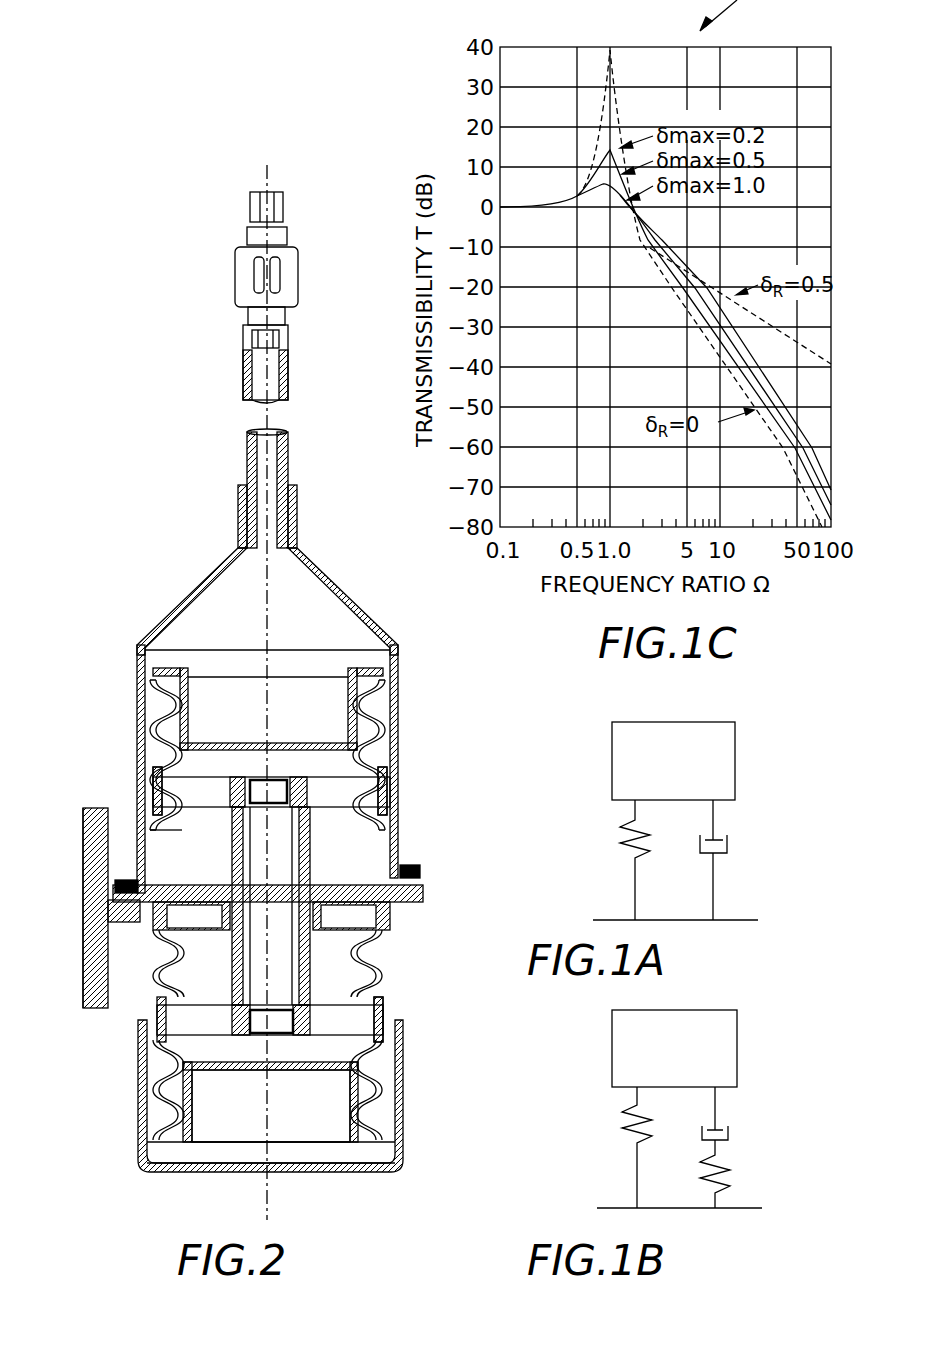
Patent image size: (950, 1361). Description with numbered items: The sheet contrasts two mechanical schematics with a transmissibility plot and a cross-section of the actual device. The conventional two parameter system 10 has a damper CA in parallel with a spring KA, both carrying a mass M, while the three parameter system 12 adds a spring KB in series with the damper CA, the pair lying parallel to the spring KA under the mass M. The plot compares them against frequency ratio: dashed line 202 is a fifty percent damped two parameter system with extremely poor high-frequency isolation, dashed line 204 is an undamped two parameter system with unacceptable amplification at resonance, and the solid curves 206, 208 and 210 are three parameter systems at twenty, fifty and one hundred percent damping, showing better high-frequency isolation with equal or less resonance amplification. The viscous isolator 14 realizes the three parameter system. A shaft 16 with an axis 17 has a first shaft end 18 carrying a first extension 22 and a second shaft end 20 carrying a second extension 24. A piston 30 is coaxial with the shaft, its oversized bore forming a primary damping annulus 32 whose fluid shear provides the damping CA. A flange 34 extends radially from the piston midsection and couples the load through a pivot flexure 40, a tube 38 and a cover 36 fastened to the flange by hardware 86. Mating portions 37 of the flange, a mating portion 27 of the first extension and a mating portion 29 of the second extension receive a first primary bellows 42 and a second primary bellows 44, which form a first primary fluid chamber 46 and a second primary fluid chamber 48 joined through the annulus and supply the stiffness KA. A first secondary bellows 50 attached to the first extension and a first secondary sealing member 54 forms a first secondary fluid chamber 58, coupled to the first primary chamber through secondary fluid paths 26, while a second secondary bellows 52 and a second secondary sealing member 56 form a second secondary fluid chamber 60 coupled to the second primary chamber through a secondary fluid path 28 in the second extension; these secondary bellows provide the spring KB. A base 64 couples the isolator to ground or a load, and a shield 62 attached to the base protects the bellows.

In FIG. 1A, the two parameter system 10 is at (765, 700).
In FIG. 1B, the three parameter system 12 is at (778, 975).
In FIG. 2, the viscous isolator 14 is at (185, 328).
In FIG. 2, the shaft 16 is at (285, 855).
In FIG. 2, the axis 17 is at (265, 705).
In FIG. 2, the first shaft end 18 is at (295, 773).
In FIG. 2, the second shaft end 20 is at (290, 1043).
In FIG. 2, the first extension 22 is at (383, 780).
In FIG. 2, the second extension 24 is at (395, 992).
In FIG. 2, the secondary fluid paths 26 is at (207, 787).
In FIG. 2, the mating portion 27 is at (135, 800).
In FIG. 2, the secondary fluid path 28 is at (140, 1163).
In FIG. 2, the mating portion 29 is at (385, 1012).
In FIG. 2, the piston 30 is at (152, 948).
In FIG. 2, the primary damping annulus 32 is at (305, 955).
In FIG. 2, the flange 34 is at (380, 912).
In FIG. 2, the cover 36 is at (313, 568).
In FIG. 2, the mating portions 37 is at (135, 918).
In FIG. 2, the tube 38 is at (289, 458).
In FIG. 2, the pivot flexure 40 is at (285, 248).
In FIG. 2, the first primary bellows 42 is at (90, 843).
In FIG. 2, the second primary bellows 44 is at (150, 975).
In FIG. 2, the first primary fluid chamber 46 is at (140, 835).
In FIG. 2, the second primary fluid chamber 48 is at (177, 1052).
In FIG. 2, the first secondary bellows 50 is at (135, 668).
In FIG. 2, the second secondary bellows 52 is at (383, 1070).
In FIG. 2, the first secondary sealing member 54 is at (352, 680).
In FIG. 2, the second secondary sealing member 56 is at (365, 1143).
In FIG. 2, the first secondary fluid chamber 58 is at (187, 668).
In FIG. 2, the second secondary fluid chamber 60 is at (283, 1050).
In FIG. 2, the shield 62 is at (250, 1173).
In FIG. 2, the base 64 is at (83, 858).
In FIG. 2, the hardware 86 is at (415, 866).
In FIG. 1C, the dashed line 202 is at (760, 320).
In FIG. 1C, the dashed line 204 is at (715, 358).
In FIG. 1C, the solid line curve 206 is at (677, 296).
In FIG. 1C, the solid line curve 208 is at (673, 296).
In FIG. 1C, the solid curve 210 is at (775, 402).